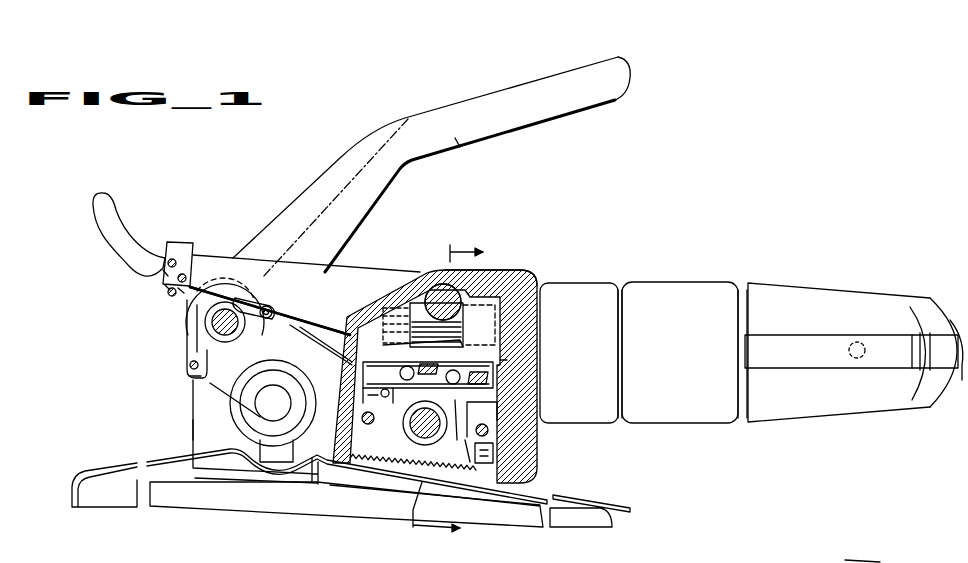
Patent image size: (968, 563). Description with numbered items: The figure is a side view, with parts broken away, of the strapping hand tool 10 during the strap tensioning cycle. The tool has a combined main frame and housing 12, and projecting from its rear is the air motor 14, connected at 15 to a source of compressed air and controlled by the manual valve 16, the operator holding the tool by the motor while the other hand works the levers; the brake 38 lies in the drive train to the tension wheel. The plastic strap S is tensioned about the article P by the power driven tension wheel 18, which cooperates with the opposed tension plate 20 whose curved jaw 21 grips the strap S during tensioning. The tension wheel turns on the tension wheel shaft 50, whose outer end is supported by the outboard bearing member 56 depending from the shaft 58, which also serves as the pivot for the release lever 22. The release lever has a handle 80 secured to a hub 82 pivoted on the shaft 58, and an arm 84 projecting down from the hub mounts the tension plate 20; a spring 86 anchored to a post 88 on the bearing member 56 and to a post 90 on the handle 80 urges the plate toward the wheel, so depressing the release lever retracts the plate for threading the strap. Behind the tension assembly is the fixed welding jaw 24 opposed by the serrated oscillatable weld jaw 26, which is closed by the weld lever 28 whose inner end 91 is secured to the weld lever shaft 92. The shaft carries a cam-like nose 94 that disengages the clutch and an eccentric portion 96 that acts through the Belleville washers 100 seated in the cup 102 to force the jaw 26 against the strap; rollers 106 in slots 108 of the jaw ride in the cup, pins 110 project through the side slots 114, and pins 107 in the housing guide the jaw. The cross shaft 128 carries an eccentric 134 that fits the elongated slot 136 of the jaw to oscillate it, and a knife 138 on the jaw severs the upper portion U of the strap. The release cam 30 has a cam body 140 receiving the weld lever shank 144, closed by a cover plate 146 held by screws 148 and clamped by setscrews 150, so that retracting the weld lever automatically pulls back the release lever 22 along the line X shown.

The hand tool 10 is at (660, 177).
The main frame and housing 12 is at (547, 292).
The air motor 14 is at (686, 353).
The compressed air connection 15 is at (960, 318).
The manual valve 16 is at (821, 360).
The tension wheel 18 is at (220, 430).
The tension plate 20 is at (232, 483).
The curved jaw 21 is at (317, 484).
The release lever 22 is at (625, 73).
The fixed welding jaw 24 is at (380, 490).
The oscillatable welding jaw 26 is at (500, 437).
The weld lever 28 is at (98, 193).
The release cam 30 is at (170, 240).
The brake 38 is at (896, 548).
The tension wheel shaft 50 is at (288, 415).
The outboard bearing member 56 is at (230, 405).
The shaft 58 is at (212, 330).
The handle 80 is at (458, 142).
The hub 82 is at (186, 323).
The arm 84 is at (200, 428).
The spring 86 is at (187, 365).
The post 88 is at (186, 374).
The post 90 is at (268, 310).
The inner end of weld lever 91 is at (527, 276).
The weld lever shaft 92 is at (420, 273).
The cam-like nose 94 is at (513, 262).
The eccentric portion 96 is at (410, 292).
The Belleville washers 100 is at (500, 318).
The cup 102 is at (500, 332).
The rollers 106 is at (383, 345).
The pins 107 is at (360, 420).
The slots 108 is at (493, 358).
The pins 110 is at (507, 377).
The side slots 114 is at (493, 397).
The cross shaft 128 is at (413, 433).
The eccentric 134 is at (444, 438).
The elongated slot 136 is at (443, 403).
The knife 138 is at (507, 466).
The cam body 140 is at (195, 245).
The weld lever shank 144 is at (315, 272).
The cover plate 146 is at (165, 288).
The screws 148 is at (180, 290).
The setscrews 150 is at (163, 273).
The strap S is at (107, 467).
The article P is at (83, 495).
The upper portion of strap U is at (567, 492).
The axis X is at (408, 120).